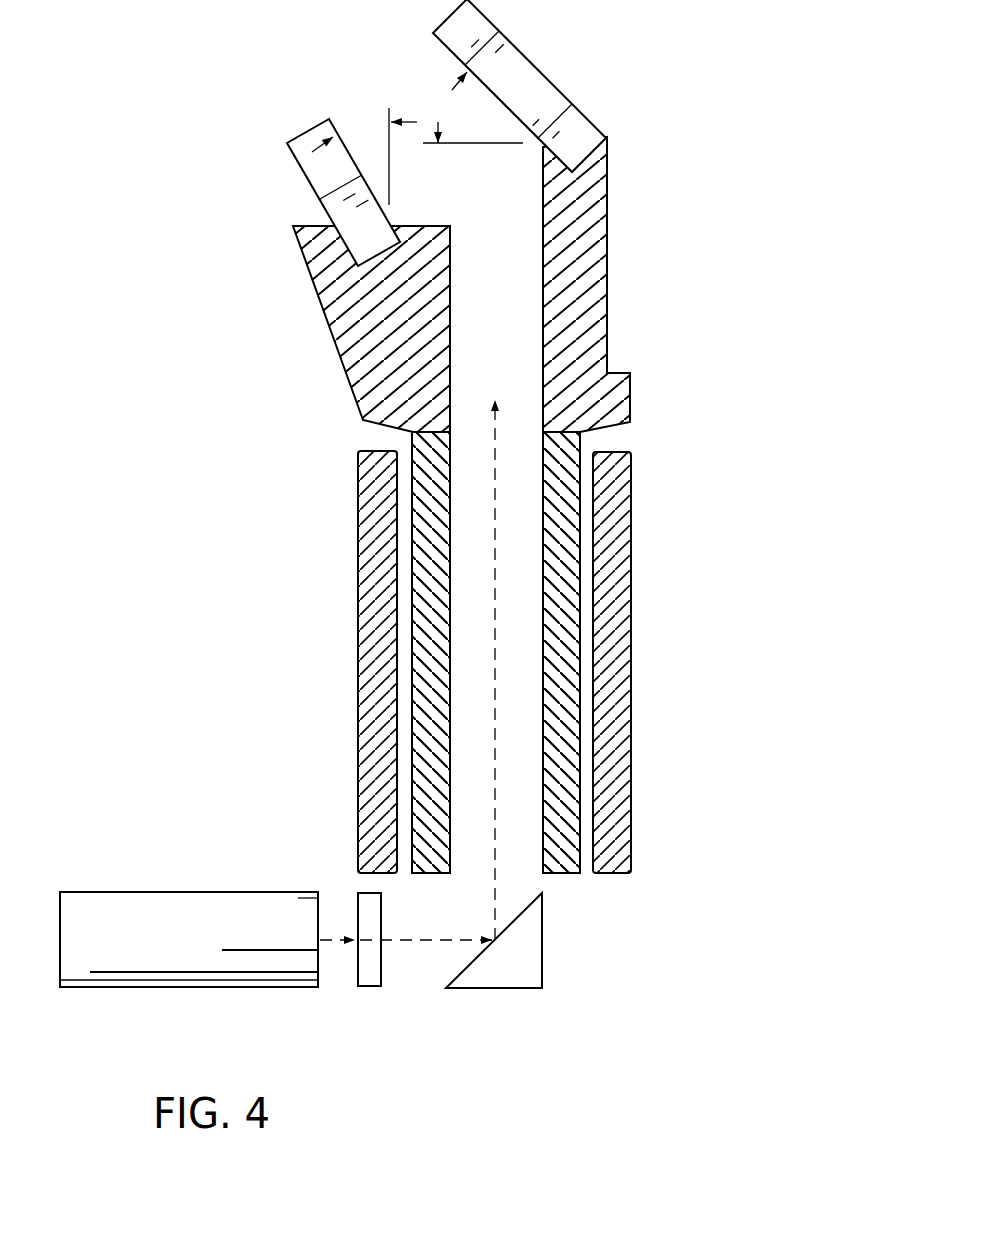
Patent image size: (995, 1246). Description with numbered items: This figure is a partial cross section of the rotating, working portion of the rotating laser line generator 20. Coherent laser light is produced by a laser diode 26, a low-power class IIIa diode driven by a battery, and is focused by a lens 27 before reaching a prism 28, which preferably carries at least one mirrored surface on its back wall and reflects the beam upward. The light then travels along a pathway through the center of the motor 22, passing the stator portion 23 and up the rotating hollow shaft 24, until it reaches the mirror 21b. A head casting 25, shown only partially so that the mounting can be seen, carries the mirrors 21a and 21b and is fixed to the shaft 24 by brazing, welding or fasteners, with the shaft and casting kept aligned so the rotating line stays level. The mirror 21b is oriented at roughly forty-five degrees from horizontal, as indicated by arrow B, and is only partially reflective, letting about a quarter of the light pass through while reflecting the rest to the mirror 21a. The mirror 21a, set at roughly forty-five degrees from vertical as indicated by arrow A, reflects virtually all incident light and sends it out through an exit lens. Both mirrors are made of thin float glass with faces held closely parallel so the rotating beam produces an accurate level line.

The rotating laser line generator 20 is at (135, 313).
The mirror 21a is at (300, 172).
The mirror 21b is at (541, 72).
The motor 22 is at (667, 608).
The stator portion 23 is at (610, 745).
The rotating hollow shaft 24 is at (418, 688).
The head casting 25 is at (633, 397).
The laser diode 26 is at (142, 892).
The lens 27 is at (367, 987).
The prism 28 is at (542, 967).